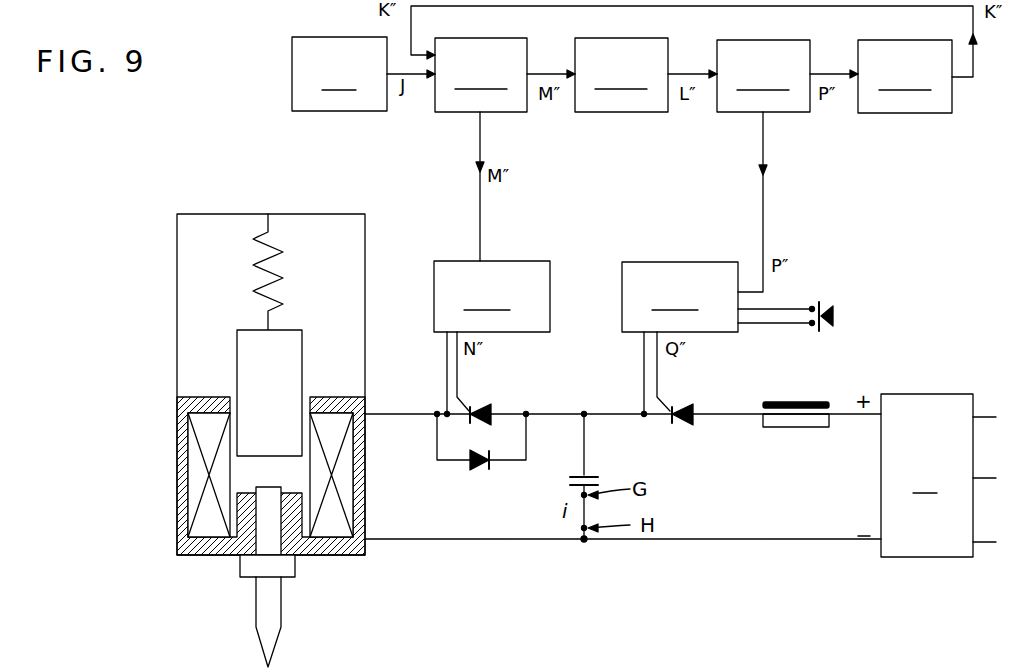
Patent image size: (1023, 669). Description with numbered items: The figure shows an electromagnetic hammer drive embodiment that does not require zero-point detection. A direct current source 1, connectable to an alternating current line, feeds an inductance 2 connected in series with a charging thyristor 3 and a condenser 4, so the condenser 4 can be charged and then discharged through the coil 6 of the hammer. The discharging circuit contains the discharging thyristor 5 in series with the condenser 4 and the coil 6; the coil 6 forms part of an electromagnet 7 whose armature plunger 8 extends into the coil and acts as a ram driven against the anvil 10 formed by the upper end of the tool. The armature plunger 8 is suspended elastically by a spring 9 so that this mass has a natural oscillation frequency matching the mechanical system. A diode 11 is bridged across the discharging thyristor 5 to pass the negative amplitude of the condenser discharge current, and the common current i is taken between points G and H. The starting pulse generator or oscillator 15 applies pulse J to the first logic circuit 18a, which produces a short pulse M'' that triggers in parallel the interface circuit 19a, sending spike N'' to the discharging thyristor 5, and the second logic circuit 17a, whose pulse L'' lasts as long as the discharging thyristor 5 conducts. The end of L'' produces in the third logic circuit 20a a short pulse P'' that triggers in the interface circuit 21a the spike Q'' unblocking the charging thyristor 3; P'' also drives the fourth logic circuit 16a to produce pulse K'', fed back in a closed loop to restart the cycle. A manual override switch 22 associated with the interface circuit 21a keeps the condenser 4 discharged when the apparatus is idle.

The direct current source 1 is at (938, 475).
The inductance 2 is at (797, 422).
The charging thyristor 3 is at (682, 425).
The condenser 4 is at (598, 478).
The discharging thyristor 5 is at (486, 408).
The coil 6 is at (198, 475).
The electromagnet 7 is at (335, 546).
The armature plunger 8 is at (292, 363).
The spring 9 is at (260, 279).
The anvil 10 is at (265, 607).
The diode 11 is at (478, 470).
The starting pulse generator or oscillator 15 is at (339, 74).
The fourth logic circuit 16a is at (905, 76).
The second logic circuit 17a is at (621, 75).
The first logic circuit 18a is at (481, 75).
The interface circuit 19a is at (492, 296).
The third logic circuit 20a is at (763, 76).
The interface circuit 21a is at (680, 297).
The manual override switch 22 is at (829, 309).